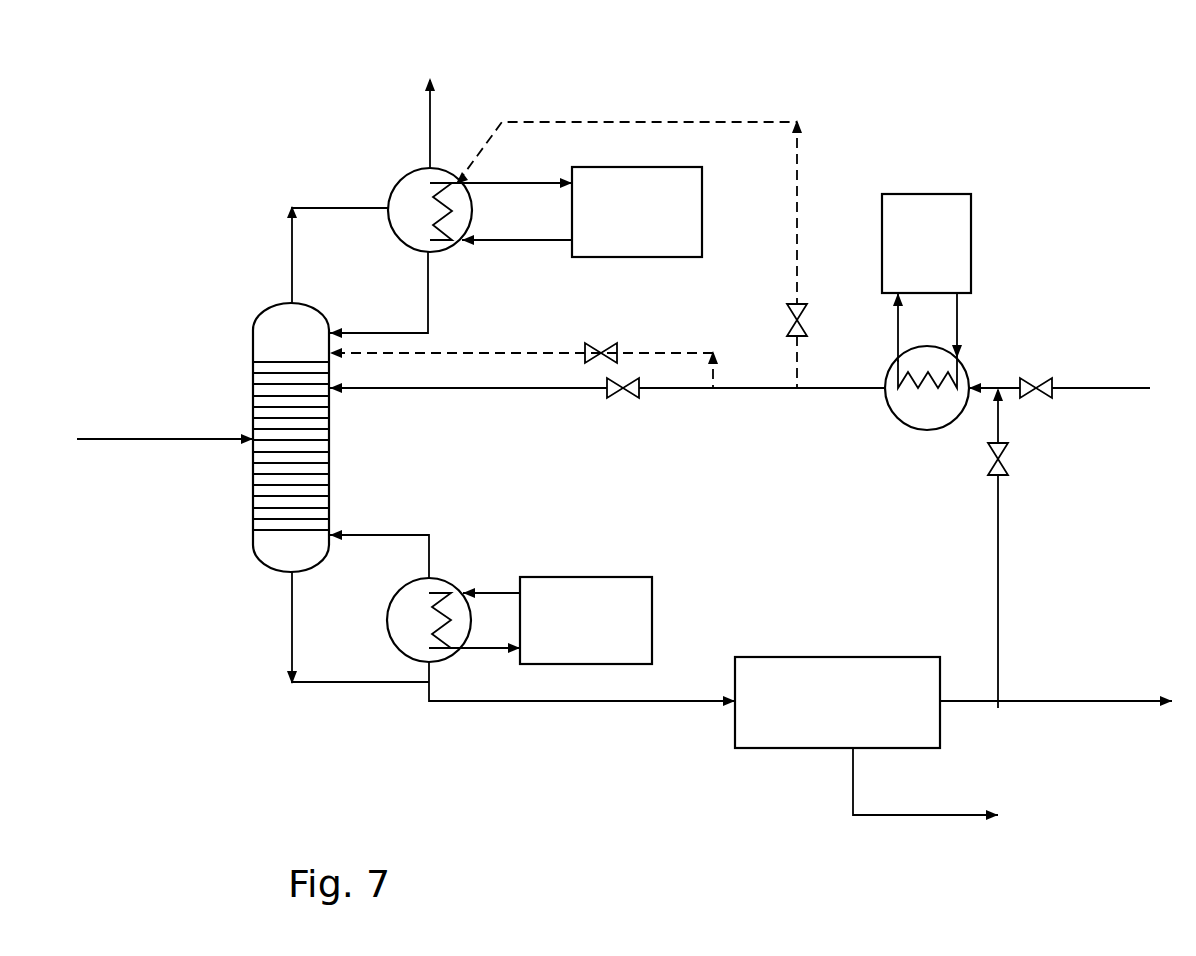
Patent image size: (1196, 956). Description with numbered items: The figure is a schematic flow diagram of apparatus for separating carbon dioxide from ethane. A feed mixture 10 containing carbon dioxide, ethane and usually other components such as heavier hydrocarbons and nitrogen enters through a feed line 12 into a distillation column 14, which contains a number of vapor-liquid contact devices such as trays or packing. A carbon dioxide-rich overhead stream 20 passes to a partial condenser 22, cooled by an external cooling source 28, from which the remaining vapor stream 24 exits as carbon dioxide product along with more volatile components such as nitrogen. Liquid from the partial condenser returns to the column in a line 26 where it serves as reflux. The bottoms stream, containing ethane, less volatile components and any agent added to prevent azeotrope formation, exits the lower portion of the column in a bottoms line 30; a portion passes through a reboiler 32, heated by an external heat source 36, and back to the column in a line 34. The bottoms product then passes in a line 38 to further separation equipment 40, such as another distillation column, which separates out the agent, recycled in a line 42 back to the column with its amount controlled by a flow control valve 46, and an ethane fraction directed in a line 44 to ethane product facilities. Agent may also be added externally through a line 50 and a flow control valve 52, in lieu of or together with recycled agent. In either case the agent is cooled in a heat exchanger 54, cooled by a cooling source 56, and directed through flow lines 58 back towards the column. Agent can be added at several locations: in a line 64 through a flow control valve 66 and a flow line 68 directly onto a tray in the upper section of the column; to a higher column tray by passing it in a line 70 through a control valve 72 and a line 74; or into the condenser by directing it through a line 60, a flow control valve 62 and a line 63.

The feed mixture 10 is at (115, 456).
The feed line 12 is at (165, 429).
The distillation column 14 is at (291, 437).
The overhead stream 20 is at (337, 245).
The partial condenser 22 is at (414, 170).
The vapor stream 24 is at (487, 121).
The reflux line 26 is at (393, 295).
The cooling source 28 is at (577, 212).
The bottoms line 30 is at (358, 638).
The reboiler 32 is at (388, 628).
The reboiler return line 34 is at (379, 544).
The heat source 36 is at (548, 620).
The bottoms product line 38 is at (582, 694).
The separation equipment 40 is at (837, 702).
The recycle line 42 is at (913, 797).
The ethane fraction line 44 is at (1056, 718).
The flow control valve 46 is at (1005, 461).
The agent addition line 50 is at (1059, 391).
The flow control valve 52 is at (1036, 380).
The heat exchanger 54 is at (940, 430).
The cooling source 56 is at (970, 278).
The flow lines 58 is at (851, 394).
The line 60 is at (811, 362).
The flow control valve 62 is at (801, 322).
The line 63 is at (639, 211).
The line 64 is at (692, 394).
The flow control valve 66 is at (623, 398).
The flow line 68 is at (468, 397).
The line 70 is at (683, 358).
The control valve 72 is at (601, 343).
The line 74 is at (521, 343).